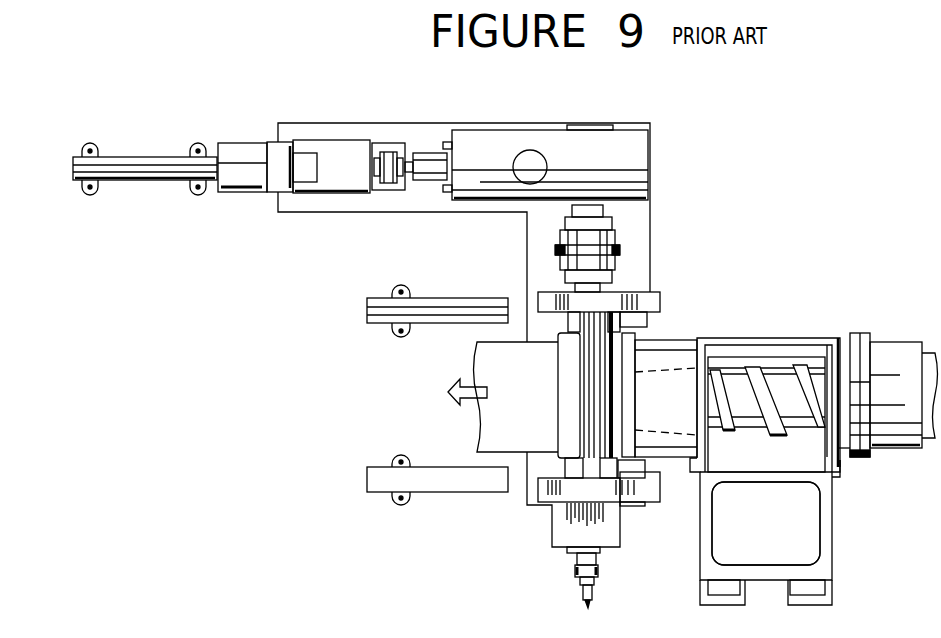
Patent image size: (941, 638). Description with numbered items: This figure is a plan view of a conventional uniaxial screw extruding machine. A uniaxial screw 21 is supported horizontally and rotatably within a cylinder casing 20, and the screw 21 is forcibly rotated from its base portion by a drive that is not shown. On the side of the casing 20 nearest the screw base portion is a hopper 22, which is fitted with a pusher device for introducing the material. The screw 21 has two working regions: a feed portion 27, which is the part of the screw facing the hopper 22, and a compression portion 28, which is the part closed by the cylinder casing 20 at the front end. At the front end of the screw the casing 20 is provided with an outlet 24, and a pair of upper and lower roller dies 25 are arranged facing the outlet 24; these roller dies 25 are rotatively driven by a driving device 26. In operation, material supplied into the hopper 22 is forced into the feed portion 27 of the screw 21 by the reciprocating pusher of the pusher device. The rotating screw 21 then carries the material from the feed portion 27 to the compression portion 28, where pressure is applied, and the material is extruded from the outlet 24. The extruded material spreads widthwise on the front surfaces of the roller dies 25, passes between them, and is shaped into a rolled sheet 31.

The cylinder casing 20 is at (743, 338).
The uniaxial screw 21 is at (773, 368).
The hopper 22 is at (732, 446).
The outlet 24 is at (628, 428).
The roller dies 25 is at (567, 435).
The driving device 26 is at (497, 140).
The feed portion 27 is at (787, 375).
The compression portion 28 is at (677, 370).
The rolled sheet 31 is at (493, 432).